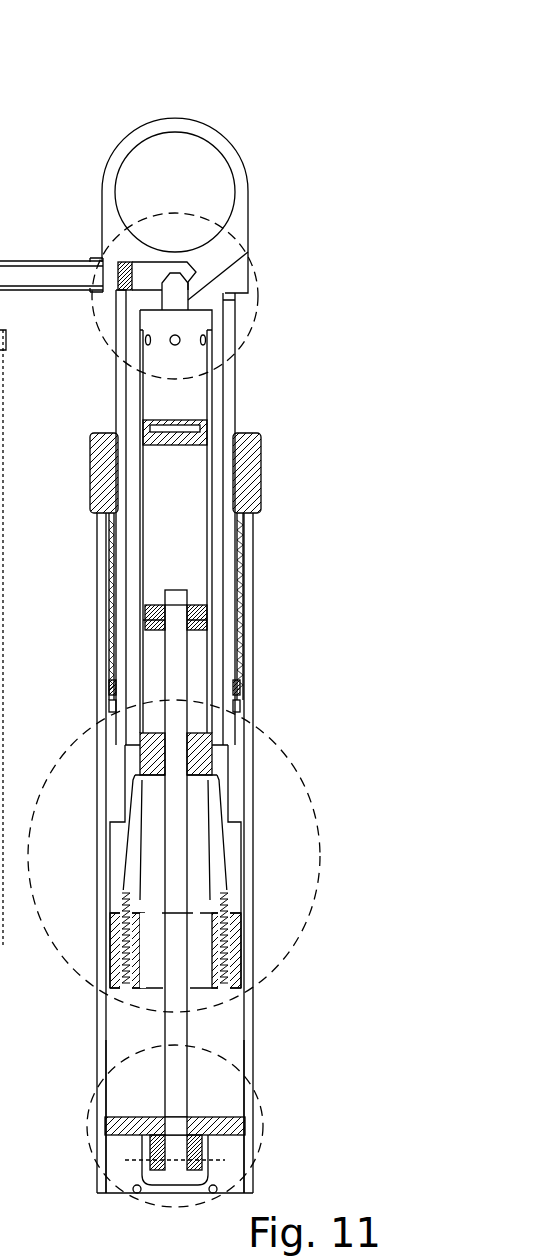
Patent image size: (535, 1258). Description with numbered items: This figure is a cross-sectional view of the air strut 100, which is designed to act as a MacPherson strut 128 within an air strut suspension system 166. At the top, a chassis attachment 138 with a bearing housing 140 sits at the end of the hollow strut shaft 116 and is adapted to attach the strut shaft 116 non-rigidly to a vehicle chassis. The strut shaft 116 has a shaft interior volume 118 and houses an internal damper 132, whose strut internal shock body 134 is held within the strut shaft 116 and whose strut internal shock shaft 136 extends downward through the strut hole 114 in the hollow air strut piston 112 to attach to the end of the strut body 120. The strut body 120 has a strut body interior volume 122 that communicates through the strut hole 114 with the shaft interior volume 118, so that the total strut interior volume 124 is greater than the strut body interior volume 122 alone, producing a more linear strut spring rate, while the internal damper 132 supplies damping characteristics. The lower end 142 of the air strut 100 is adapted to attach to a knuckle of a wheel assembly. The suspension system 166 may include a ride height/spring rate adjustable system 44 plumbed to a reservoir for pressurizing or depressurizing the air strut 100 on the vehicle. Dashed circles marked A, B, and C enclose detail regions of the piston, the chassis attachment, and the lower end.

The air strut 100 is at (202, 171).
The MacPherson strut 128 is at (202, 171).
The air strut suspension system 166 is at (202, 176).
The chassis attachment 138 is at (142, 163).
The bearing housing 140 is at (120, 158).
The strut shaft 116 is at (235, 380).
The shaft interior volume 118 is at (170, 413).
The strut internal shock body 134 is at (213, 515).
The internal damper 132 is at (215, 567).
The total strut interior volume 124 is at (82, 565).
The strut internal shock shaft 136 is at (177, 688).
The strut body interior volume 122 is at (100, 648).
The air strut piston 112 is at (243, 898).
The strut hole 114 is at (208, 947).
The strut body 120 is at (252, 1040).
The lower end 142 is at (255, 1197).
The ride height/spring rate adjustable system 44 is at (0, 1066).
The detail A is at (287, 750).
The detail B is at (262, 297).
The detail C is at (260, 1098).